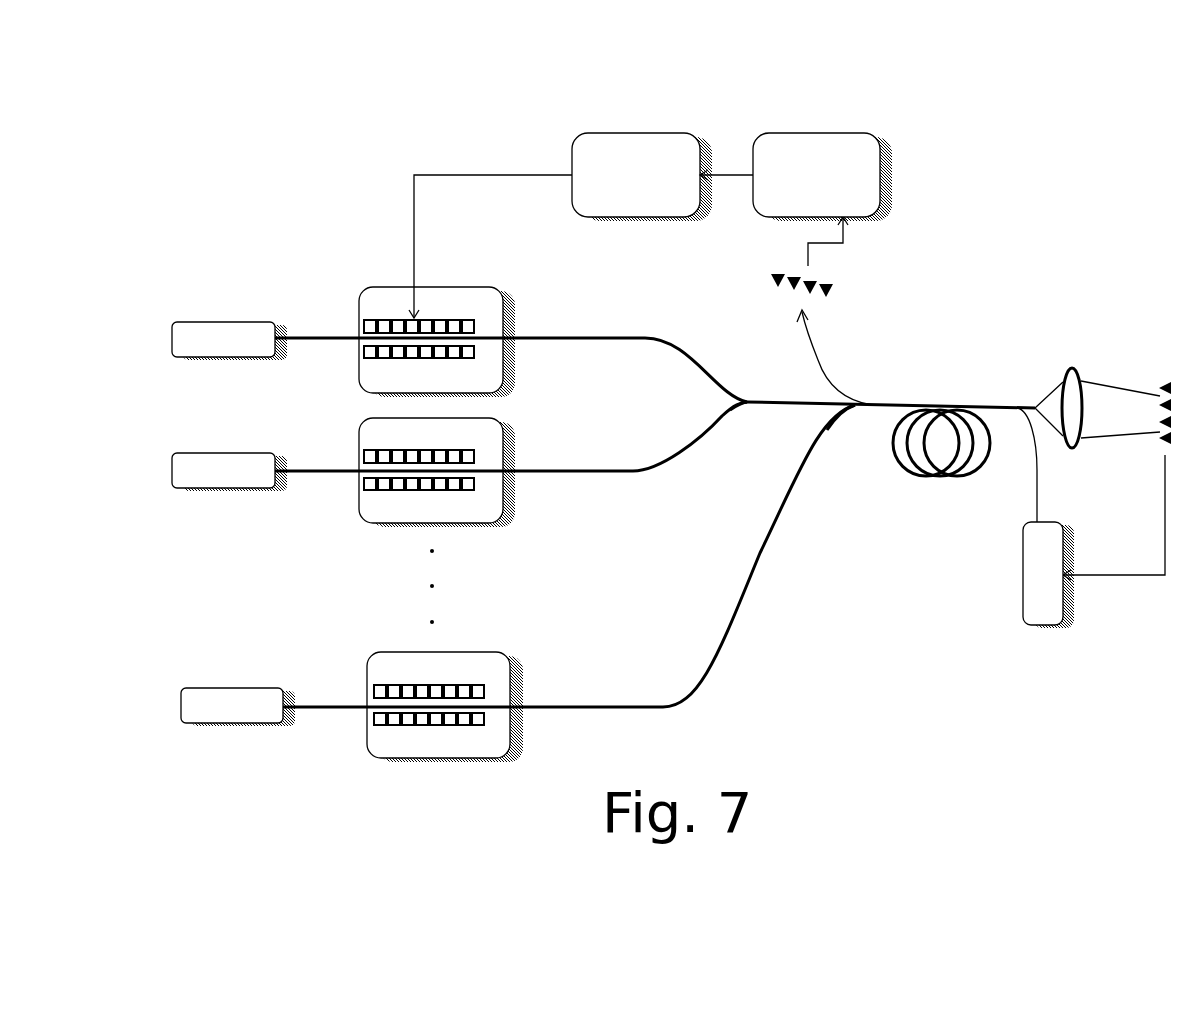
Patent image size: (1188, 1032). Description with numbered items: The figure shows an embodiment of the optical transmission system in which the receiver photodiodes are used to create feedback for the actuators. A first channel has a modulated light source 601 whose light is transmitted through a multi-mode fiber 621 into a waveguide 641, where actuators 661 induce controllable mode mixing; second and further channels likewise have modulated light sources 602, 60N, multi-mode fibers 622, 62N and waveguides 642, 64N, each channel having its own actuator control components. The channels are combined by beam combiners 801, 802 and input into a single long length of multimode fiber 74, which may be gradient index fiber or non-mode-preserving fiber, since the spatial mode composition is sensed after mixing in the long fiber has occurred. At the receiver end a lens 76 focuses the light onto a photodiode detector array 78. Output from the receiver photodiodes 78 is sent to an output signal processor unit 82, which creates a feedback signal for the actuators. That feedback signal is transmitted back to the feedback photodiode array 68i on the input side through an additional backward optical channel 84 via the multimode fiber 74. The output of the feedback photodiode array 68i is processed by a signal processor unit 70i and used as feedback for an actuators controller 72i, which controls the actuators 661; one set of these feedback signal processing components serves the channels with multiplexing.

The modulated light source 601 is at (233, 320).
The modulated light source 602 is at (233, 453).
The modulated light source 60N is at (233, 688).
The multi-mode fiber 621 is at (322, 337).
The multi-mode fiber 622 is at (555, 473).
The multi-mode fiber 62N is at (550, 700).
The waveguide 641 is at (472, 314).
The waveguide 642 is at (437, 472).
The waveguide 64N is at (445, 707).
The actuators 661 is at (485, 360).
The feedback photodiode array 68i is at (805, 277).
The signal processor unit 70i is at (813, 132).
The actuators controller 72i is at (637, 132).
The gradient index multimode fiber 74 is at (792, 402).
The lens 76 is at (1050, 368).
The photodiode detector array 78 is at (1165, 365).
The beam combiner 801 is at (747, 403).
The beam combiner 802 is at (848, 427).
The output signal processor unit 82 is at (1037, 625).
The backward optical channel 84 is at (820, 358).